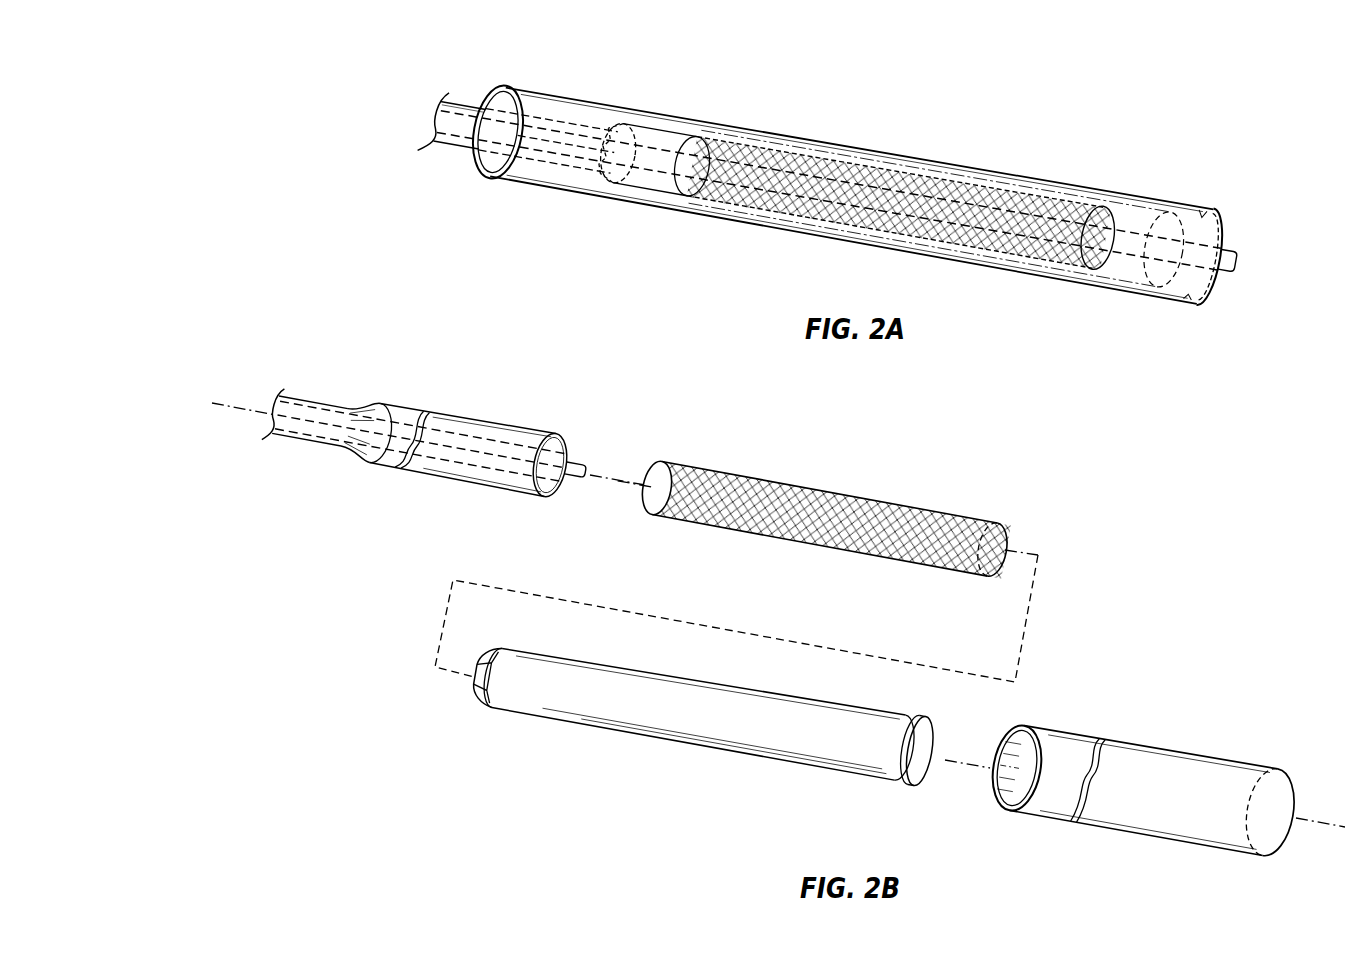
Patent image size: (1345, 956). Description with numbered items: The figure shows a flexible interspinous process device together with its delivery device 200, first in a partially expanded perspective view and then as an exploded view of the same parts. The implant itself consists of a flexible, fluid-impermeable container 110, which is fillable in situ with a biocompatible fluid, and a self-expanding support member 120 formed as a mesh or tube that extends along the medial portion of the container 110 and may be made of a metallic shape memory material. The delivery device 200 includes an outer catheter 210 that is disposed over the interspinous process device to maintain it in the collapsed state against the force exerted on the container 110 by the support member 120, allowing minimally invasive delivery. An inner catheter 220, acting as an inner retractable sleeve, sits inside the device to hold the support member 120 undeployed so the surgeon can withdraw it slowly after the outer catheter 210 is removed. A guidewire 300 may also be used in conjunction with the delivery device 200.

In FIG. 2A, the container 110 is at (1128, 265).
In FIG. 2B, the container 110 is at (660, 735).
In FIG. 2A, the support member 120 is at (1112, 220).
In FIG. 2B, the support member 120 is at (858, 497).
In FIG. 2A, the delivery device 200 is at (470, 107).
In FIG. 2A, the outer catheter 210 is at (603, 102).
In FIG. 2B, the outer catheter 210 is at (1207, 758).
In FIG. 2A, the inner catheter 220 is at (618, 178).
In FIG. 2B, the inner catheter 220 is at (380, 470).
In FIG. 2A, the guidewire 300 is at (1238, 256).